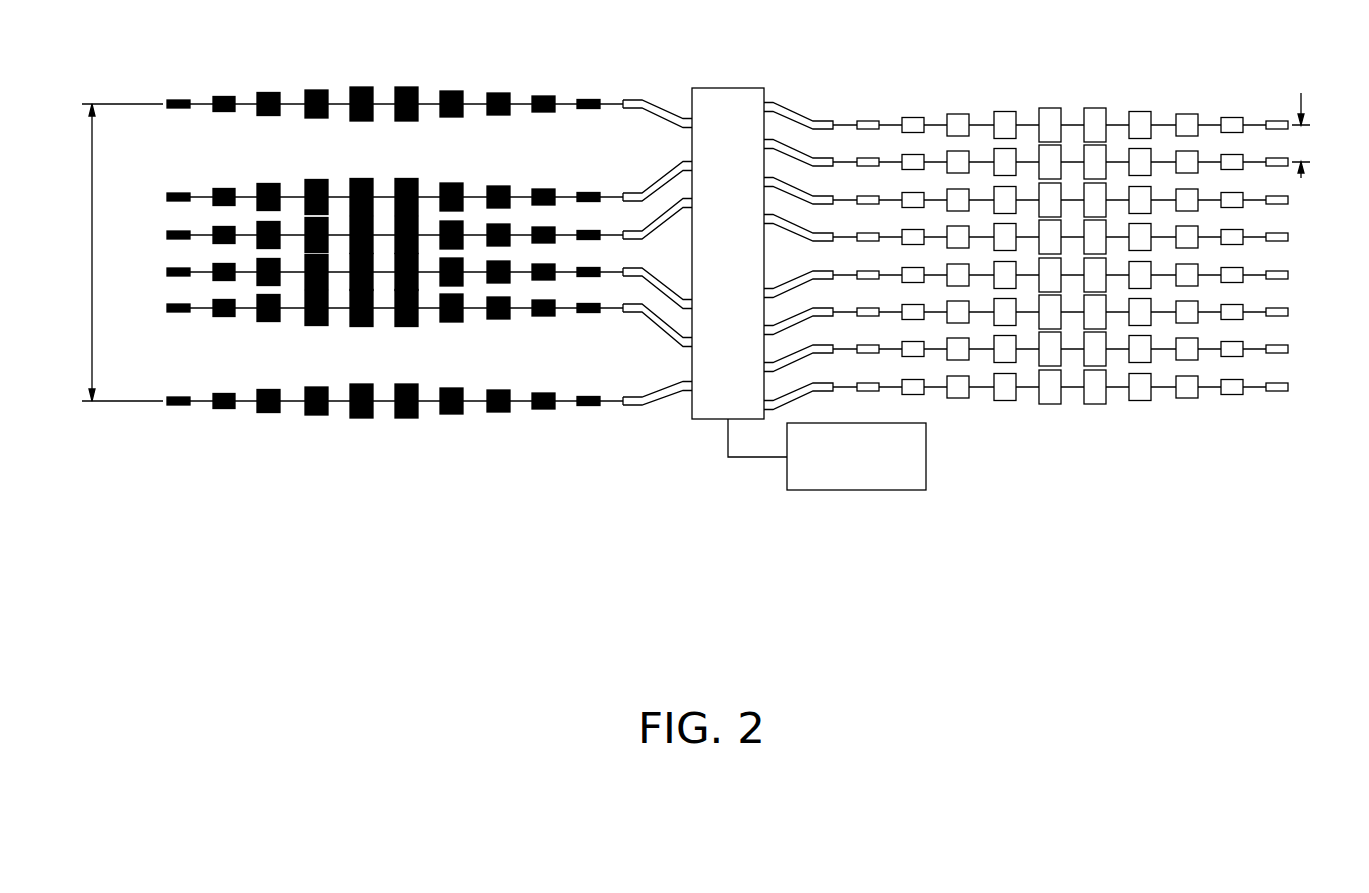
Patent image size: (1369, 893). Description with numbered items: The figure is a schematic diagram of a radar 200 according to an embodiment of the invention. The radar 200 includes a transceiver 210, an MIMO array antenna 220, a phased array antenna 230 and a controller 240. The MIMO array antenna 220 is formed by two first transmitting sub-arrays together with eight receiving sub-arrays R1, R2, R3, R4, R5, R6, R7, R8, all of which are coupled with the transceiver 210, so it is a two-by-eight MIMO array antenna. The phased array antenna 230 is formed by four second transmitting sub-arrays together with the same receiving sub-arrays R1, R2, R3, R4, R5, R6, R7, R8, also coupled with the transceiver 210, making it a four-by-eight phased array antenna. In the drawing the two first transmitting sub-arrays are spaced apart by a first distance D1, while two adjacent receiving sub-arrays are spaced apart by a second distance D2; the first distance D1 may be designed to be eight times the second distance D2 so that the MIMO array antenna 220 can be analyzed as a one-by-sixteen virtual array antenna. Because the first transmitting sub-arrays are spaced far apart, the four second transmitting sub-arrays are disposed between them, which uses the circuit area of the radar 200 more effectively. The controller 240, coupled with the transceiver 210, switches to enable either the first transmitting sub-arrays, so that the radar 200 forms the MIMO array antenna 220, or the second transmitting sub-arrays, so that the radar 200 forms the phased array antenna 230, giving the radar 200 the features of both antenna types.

The radar 200 is at (948, 582).
The transceiver 210 is at (702, 420).
The MIMO array antenna 220 is at (603, 379).
The phased array antenna 230 is at (706, 425).
The controller 240 is at (927, 459).
The receiving sub-array R1 is at (1250, 125).
The receiving sub-array R2 is at (1258, 162).
The receiving sub-array R3 is at (1258, 200).
The receiving sub-array R4 is at (1258, 237).
The receiving sub-array R5 is at (1258, 275).
The receiving sub-array R6 is at (1258, 312).
The receiving sub-array R7 is at (1258, 349).
The receiving sub-array R8 is at (1258, 387).
The first distance D1 is at (115, 252).
The second distance D2 is at (1313, 135).